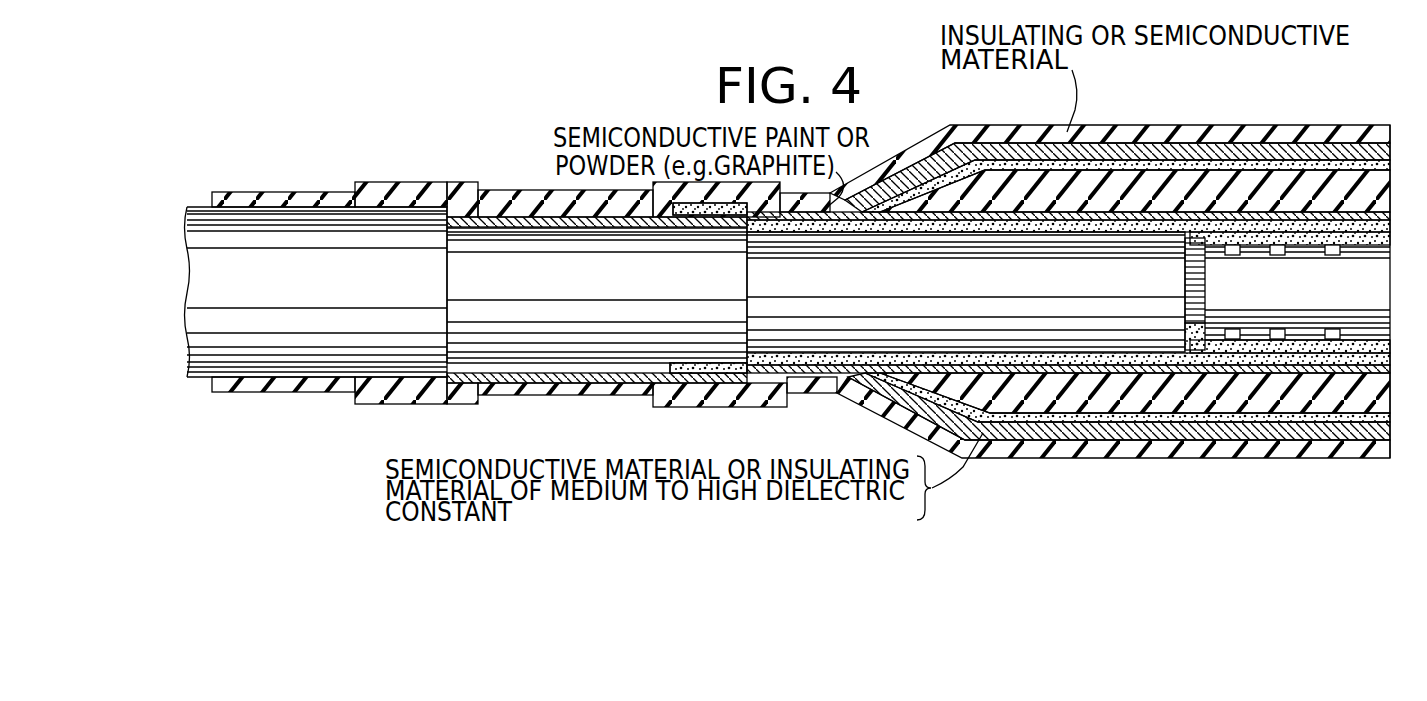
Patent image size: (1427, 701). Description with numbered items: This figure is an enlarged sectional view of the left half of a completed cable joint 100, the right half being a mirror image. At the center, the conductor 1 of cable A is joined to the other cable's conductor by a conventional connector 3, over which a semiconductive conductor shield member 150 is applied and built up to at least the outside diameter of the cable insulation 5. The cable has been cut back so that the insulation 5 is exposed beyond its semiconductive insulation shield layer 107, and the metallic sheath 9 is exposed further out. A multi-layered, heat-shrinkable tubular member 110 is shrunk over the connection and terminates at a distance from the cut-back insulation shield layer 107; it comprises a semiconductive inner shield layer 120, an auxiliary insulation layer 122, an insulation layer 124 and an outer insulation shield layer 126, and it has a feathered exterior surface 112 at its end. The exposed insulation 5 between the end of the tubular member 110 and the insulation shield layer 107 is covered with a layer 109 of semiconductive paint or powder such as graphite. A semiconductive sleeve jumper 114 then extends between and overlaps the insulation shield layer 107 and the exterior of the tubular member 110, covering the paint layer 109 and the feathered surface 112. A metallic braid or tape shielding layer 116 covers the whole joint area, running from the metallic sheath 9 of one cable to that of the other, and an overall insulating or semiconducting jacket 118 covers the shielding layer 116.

The metallic sheath 9 is at (296, 297).
The semiconductive insulation shield layer 107 is at (614, 289).
The layer of semiconductive paint or powder 109 is at (813, 233).
The cable insulation 5 is at (1040, 298).
The conductor 1 is at (1190, 290).
The connector 3 is at (1336, 298).
The cable joint 100 is at (966, 98).
The sleeve jumper 114 is at (1004, 160).
The metallic shielding layer 116 is at (1103, 147).
The jacket 118 is at (1183, 125).
The insulation shield layer 126 is at (1240, 185).
The insulation layer 124 is at (1302, 188).
The auxiliary insulation layer 122 is at (1362, 213).
The feathered exterior surface 112 is at (905, 415).
The semiconductive inner shield layer 120 is at (1043, 367).
The semiconductive conductor shield member 150 is at (1303, 347).
The tubular member 110 is at (1398, 355).
The cable A is at (225, 409).